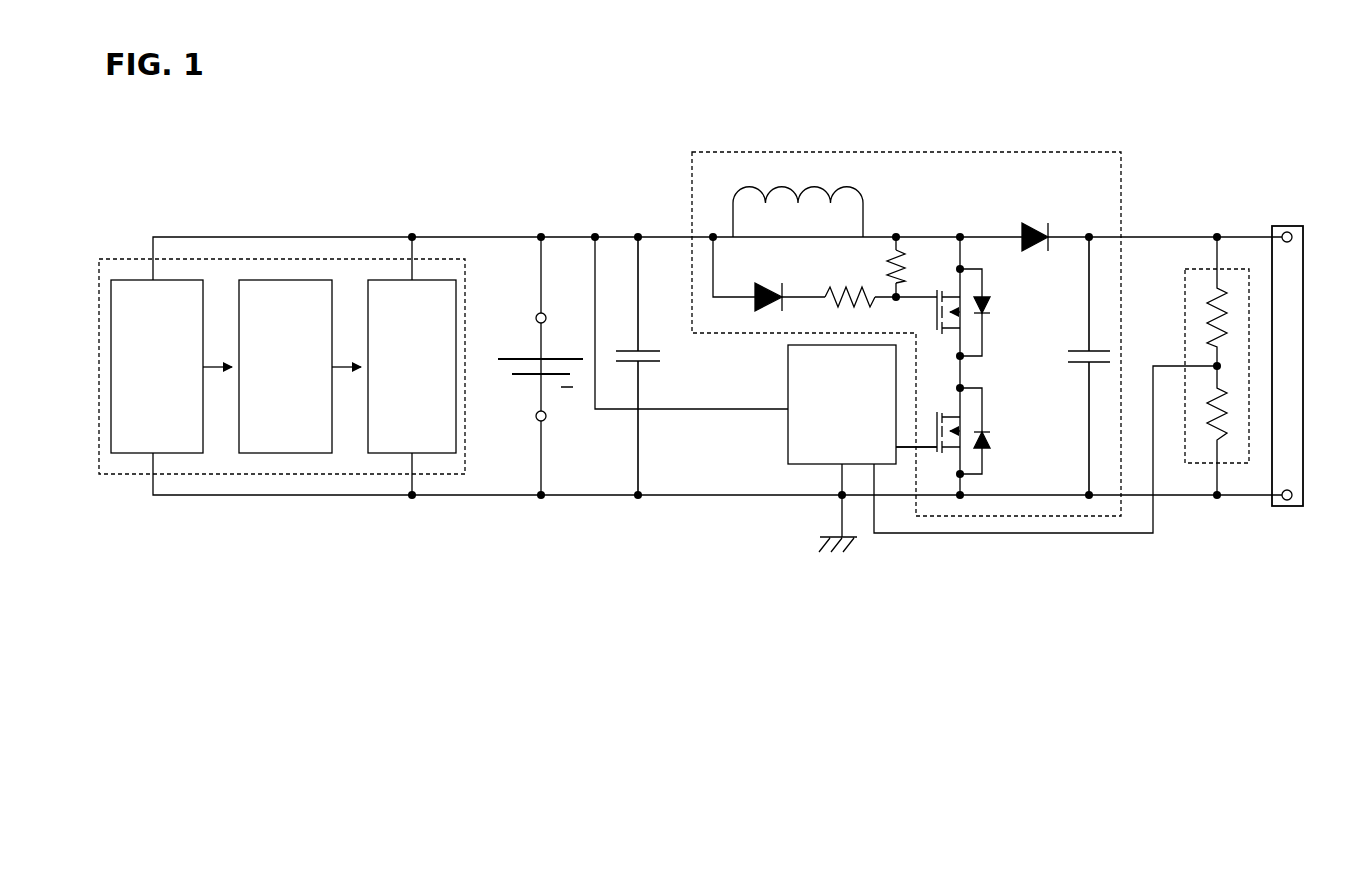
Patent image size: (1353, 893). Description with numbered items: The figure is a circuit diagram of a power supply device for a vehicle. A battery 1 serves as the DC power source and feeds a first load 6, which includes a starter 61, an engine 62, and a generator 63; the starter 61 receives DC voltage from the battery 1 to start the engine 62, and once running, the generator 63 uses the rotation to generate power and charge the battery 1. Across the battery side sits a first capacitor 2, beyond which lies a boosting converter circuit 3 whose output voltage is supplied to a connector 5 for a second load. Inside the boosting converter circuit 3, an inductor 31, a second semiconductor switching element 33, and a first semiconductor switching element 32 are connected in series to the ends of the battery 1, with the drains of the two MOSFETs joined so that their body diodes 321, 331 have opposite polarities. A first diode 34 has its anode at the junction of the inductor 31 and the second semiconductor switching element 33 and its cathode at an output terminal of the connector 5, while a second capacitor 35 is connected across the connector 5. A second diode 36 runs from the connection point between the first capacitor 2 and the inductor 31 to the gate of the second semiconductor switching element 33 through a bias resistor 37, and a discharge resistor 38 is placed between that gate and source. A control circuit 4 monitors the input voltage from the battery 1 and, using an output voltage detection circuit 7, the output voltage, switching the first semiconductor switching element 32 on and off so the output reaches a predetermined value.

The battery 1 is at (522, 389).
The first capacitor 2 is at (649, 366).
The boosting converter circuit 3 is at (837, 145).
The inductor 31 is at (798, 198).
The first semiconductor switching element 32 is at (944, 444).
The body diode 321 is at (994, 431).
The second semiconductor switching element 33 is at (944, 324).
The body diode 331 is at (994, 312).
The first diode 34 is at (1035, 249).
The second capacitor 35 is at (1082, 366).
The second diode 36 is at (769, 283).
The bias resistor 37 is at (850, 309).
The discharge resistor 38 is at (883, 266).
The control circuit 4 is at (780, 447).
The connector 5 is at (1290, 208).
The first load 6 is at (216, 250).
The starter 61 is at (136, 465).
The engine 62 is at (266, 465).
The generator 63 is at (384, 465).
The output voltage detection circuit 7 is at (1196, 474).